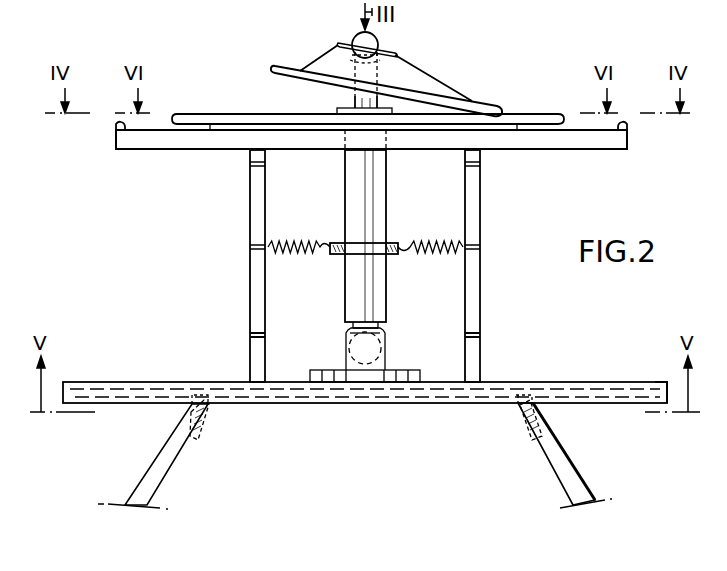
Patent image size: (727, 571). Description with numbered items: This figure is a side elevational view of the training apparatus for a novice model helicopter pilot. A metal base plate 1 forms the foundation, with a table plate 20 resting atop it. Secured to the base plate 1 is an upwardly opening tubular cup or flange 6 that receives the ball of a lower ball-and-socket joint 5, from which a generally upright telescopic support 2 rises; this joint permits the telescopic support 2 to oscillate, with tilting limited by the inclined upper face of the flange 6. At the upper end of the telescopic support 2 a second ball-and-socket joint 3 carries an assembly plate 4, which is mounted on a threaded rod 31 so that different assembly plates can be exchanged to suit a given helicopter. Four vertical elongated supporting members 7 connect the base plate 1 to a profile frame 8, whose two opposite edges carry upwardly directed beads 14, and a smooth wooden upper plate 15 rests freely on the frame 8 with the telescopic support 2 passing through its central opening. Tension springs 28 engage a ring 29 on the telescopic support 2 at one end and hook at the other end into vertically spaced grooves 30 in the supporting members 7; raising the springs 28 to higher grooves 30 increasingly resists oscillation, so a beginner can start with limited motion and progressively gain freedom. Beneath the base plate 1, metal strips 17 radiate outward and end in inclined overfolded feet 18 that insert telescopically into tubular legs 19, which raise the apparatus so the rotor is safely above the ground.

The base plate 1 is at (452, 396).
The telescopic support 2 is at (372, 188).
The ball-and-socket joint 3 is at (379, 46).
The assembly plate 4 is at (422, 89).
The ball-and-socket joint 5 is at (386, 352).
The tubular cup or flange 6 is at (345, 352).
The elongated supporting members 7 is at (250, 199).
The profile frame 8 is at (162, 152).
The upwardly directed beads 14 is at (118, 132).
The upper plate 15 is at (196, 114).
The metal strips 17 is at (301, 395).
The overfolded foot 18 is at (190, 430).
The tubular legs 19 is at (158, 477).
The table plate 20 is at (601, 383).
The tension springs 28 is at (296, 239).
The ring 29 is at (338, 255).
The grooves 30 is at (256, 331).
The threaded rod 31 is at (355, 93).